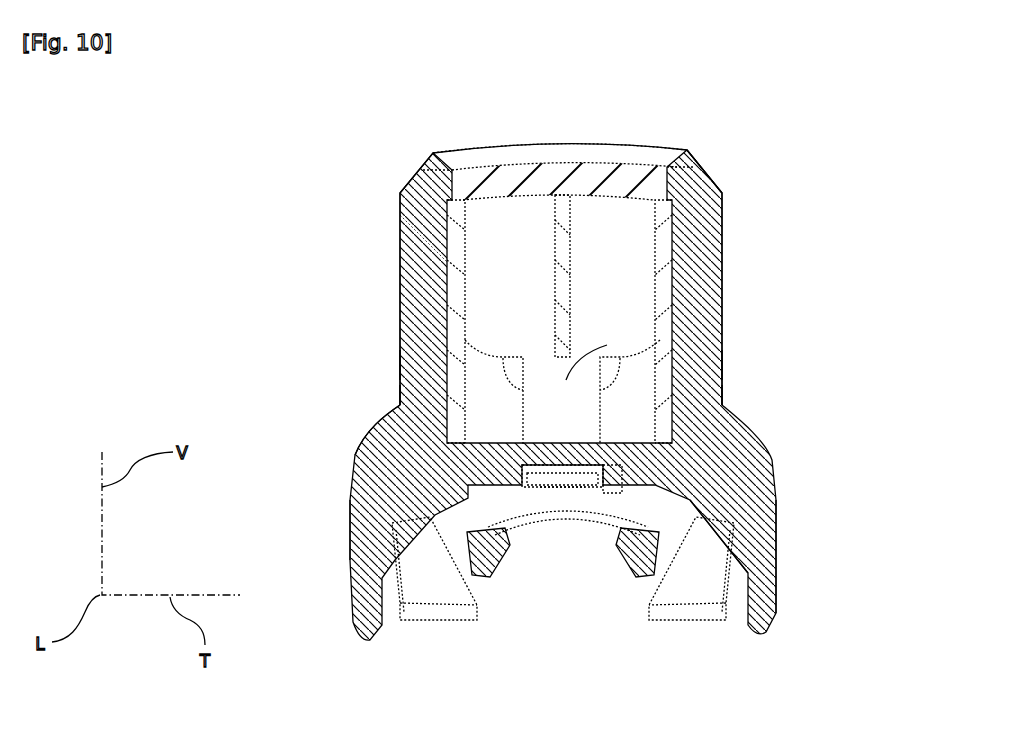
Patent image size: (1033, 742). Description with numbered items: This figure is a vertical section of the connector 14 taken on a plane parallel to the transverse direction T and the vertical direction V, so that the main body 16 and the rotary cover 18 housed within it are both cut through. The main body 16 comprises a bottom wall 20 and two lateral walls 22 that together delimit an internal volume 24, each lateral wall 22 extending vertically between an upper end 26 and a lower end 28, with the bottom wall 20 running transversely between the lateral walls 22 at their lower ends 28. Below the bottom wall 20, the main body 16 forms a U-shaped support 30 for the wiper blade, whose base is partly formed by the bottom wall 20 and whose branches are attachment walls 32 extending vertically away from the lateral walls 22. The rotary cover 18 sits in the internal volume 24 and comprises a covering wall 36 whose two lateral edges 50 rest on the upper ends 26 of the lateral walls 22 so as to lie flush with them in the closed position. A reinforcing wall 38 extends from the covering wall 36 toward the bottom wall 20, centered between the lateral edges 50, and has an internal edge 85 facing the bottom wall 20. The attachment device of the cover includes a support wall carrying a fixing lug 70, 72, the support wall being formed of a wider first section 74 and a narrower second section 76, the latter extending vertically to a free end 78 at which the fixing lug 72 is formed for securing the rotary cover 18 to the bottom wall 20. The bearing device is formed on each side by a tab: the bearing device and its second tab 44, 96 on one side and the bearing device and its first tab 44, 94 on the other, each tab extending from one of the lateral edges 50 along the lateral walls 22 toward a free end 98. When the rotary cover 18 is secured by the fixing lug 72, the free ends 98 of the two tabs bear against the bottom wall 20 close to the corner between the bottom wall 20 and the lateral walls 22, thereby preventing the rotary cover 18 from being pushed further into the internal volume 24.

The connector 14 is at (318, 306).
The main body 16 is at (768, 518).
The rotary cover 18 is at (460, 180).
The bottom wall 20 is at (470, 495).
The lateral walls 22 is at (400, 365).
The internal volume 24 is at (477, 440).
The upper end 26 is at (688, 155).
The lower end 28 is at (375, 430).
The support 30 is at (620, 492).
The attachment wall 32 is at (352, 500).
The covering wall 36 is at (562, 150).
The reinforcing wall 38 is at (560, 238).
The left sleeve 44, 96 is at (450, 267).
The right sleeve 44, 94 is at (660, 282).
The lateral edges 50 is at (458, 158).
The chamber 70, 72 is at (620, 220).
The fixing lug 72 is at (563, 490).
The first section 74 is at (482, 242).
The second section 76 is at (607, 345).
The free end 78 is at (580, 488).
The internal edge 85 is at (535, 489).
The free end 98 is at (430, 394).